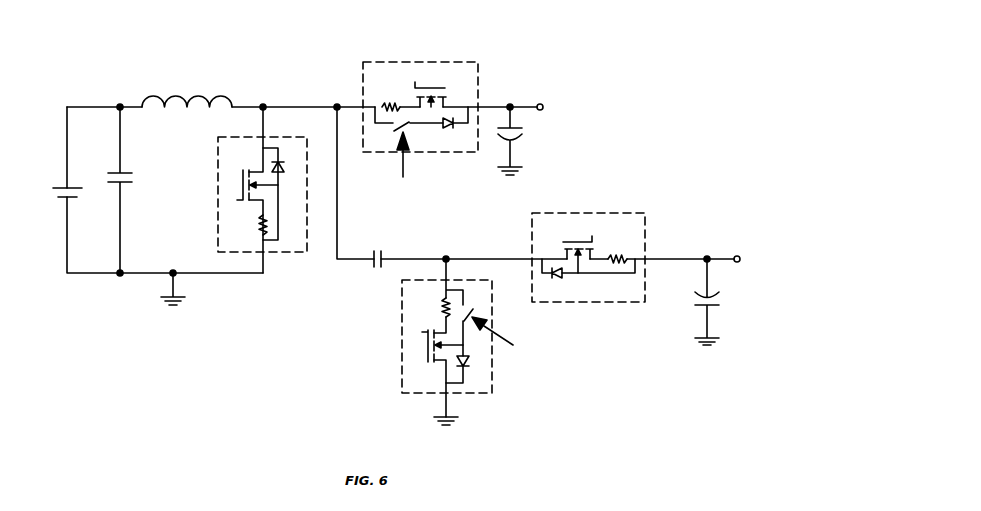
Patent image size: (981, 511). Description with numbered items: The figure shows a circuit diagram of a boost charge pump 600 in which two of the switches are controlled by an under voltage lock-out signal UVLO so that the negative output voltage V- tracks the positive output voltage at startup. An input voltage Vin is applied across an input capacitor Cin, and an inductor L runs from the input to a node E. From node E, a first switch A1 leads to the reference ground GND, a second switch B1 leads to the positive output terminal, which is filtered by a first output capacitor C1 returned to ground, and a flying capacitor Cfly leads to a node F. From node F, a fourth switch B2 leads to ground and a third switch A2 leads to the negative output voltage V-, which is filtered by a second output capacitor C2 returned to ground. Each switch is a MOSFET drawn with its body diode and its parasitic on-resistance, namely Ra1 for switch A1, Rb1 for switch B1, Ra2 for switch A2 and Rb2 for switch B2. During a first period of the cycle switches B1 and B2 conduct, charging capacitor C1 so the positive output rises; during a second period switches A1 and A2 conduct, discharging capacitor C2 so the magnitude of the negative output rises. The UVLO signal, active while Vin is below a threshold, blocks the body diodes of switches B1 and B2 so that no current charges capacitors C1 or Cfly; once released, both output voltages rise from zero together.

The boost charge pump 600 is at (650, 82).
The input voltage Vin is at (58, 178).
The input capacitor Cin is at (130, 190).
The inductor L is at (187, 91).
The node E is at (262, 90).
The reference ground GND is at (173, 298).
The first switch A1 is at (243, 190).
The parasitic on-resistance of first switch Ra1 is at (247, 225).
The second switch B1 is at (420, 91).
The parasitic on-resistance of second switch Rb1 is at (392, 99).
The under voltage lock-out signal UVLO is at (476, 244).
The first output capacitor C1 is at (529, 141).
The flying capacitor Cfly is at (374, 246).
The node F is at (445, 244).
The fourth switch B2 is at (418, 342).
The parasitic on-resistance of fourth switch Rb2 is at (429, 307).
The third switch A2 is at (598, 277).
The parasitic on-resistance of third switch Ra2 is at (615, 251).
The negative output voltage V- is at (747, 259).
The second output capacitor C2 is at (693, 302).